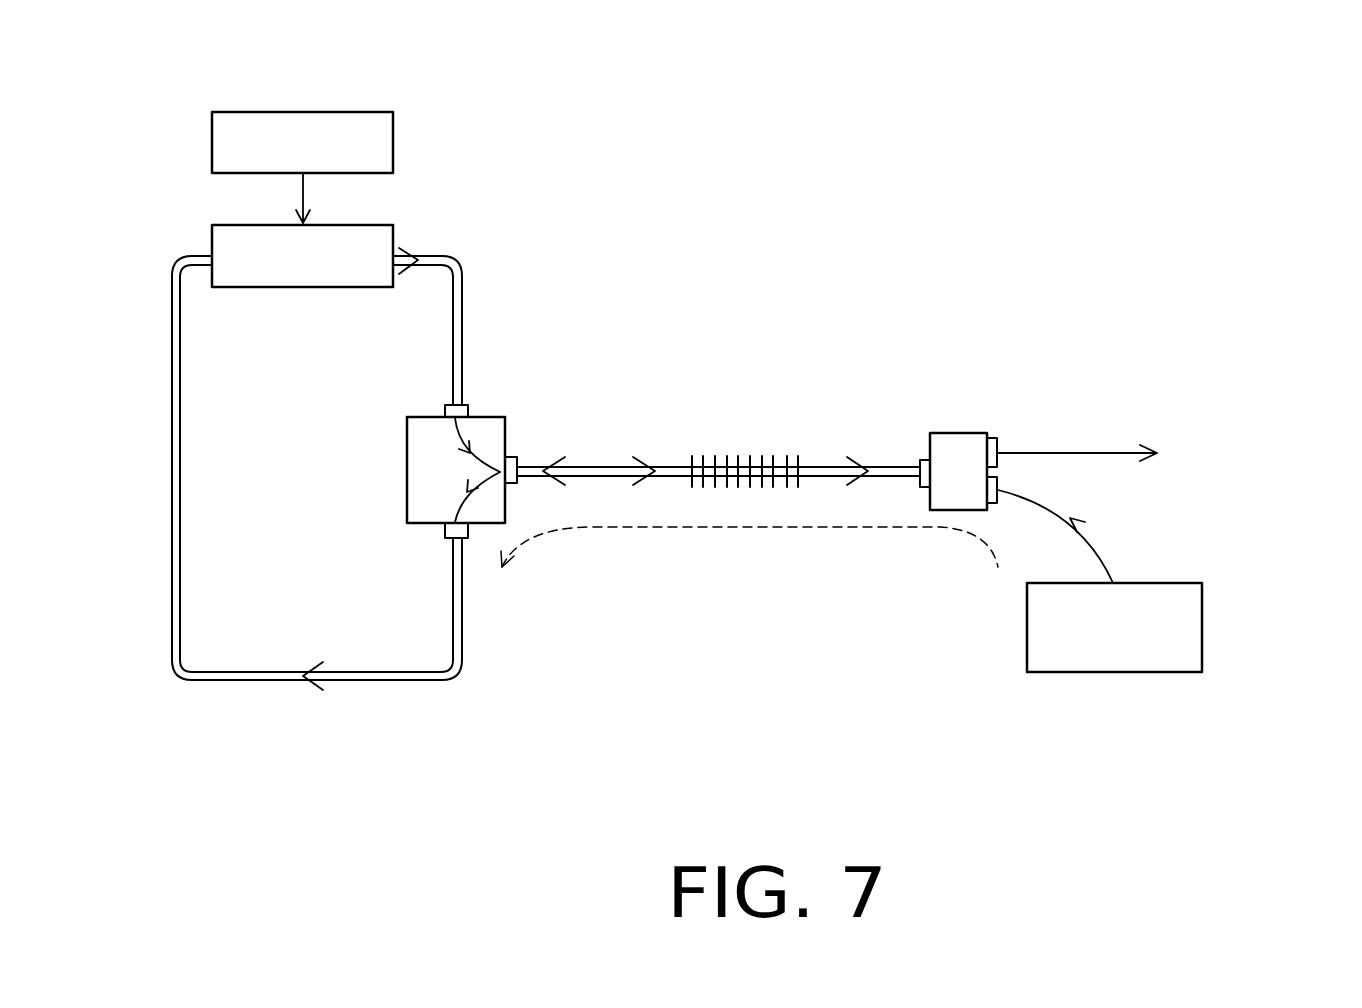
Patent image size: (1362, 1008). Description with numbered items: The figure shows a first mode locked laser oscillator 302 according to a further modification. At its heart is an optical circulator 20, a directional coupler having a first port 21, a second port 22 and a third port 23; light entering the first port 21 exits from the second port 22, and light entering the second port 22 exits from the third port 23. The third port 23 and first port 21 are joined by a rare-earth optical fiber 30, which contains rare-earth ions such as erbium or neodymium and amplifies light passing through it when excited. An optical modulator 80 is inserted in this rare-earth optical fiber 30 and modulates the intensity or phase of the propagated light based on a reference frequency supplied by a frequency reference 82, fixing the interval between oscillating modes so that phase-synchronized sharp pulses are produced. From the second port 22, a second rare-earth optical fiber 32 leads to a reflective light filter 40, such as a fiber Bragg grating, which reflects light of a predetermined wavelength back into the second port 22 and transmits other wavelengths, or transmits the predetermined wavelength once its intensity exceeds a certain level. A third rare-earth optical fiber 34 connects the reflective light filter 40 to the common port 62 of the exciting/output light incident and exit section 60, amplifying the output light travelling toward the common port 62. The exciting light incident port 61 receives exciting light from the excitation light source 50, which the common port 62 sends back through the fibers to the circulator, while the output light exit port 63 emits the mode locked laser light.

The first mode locked laser oscillator 302 is at (145, 40).
The frequency reference 82 is at (393, 145).
The optical modulator 80 is at (350, 225).
The rare-earth optical fiber 30 is at (172, 468).
The optical circulator 20 is at (475, 461).
The first port 21 is at (445, 405).
The second port 22 is at (510, 455).
The third port 23 is at (445, 540).
The second rare-earth optical fiber 32 is at (610, 462).
The reflective light filter 40 is at (758, 456).
The third rare-earth optical fiber 34 is at (818, 462).
The exciting/output light incident and exit section 60 is at (972, 445).
The exciting light incident port 61 is at (995, 500).
The common port 62 is at (923, 458).
The output light exit port 63 is at (995, 438).
The excitation light source 50 is at (1202, 625).